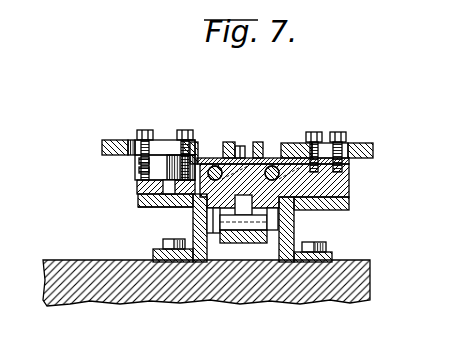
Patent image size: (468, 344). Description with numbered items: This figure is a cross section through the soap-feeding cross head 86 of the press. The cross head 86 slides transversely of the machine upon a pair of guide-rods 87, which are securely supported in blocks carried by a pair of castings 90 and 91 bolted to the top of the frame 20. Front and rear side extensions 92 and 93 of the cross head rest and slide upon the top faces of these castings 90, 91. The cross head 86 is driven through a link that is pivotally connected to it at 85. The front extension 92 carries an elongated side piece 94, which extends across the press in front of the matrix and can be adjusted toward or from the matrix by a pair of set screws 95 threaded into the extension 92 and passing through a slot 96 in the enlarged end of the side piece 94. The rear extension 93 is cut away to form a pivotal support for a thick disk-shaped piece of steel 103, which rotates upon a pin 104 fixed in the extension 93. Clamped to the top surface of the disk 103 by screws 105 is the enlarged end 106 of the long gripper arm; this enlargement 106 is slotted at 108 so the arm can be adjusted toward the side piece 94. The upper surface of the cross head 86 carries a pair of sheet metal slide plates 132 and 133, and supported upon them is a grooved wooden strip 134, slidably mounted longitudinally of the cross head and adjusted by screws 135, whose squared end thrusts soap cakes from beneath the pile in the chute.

The frame 20 is at (73, 271).
The pivotal connection 85 is at (259, 225).
The cross head 86 is at (207, 143).
The guide-rods 87 is at (193, 204).
The casting 90 is at (346, 205).
The casting 91 is at (163, 208).
The front side extension 92 is at (338, 182).
The rear side extension 93 is at (137, 186).
The side piece 94 is at (366, 143).
The set screws 95 is at (337, 131).
The slot 96 is at (353, 144).
The disk-shaped piece of steel 103 is at (136, 168).
The pin 104 is at (140, 200).
The screws 105 is at (185, 128).
The enlarged end 106 is at (102, 141).
The slot 108 is at (131, 142).
The slide plate 132 is at (231, 142).
The slide plate 133 is at (272, 157).
The grooved wooden strip 134 is at (254, 158).
The screws 135 is at (240, 145).